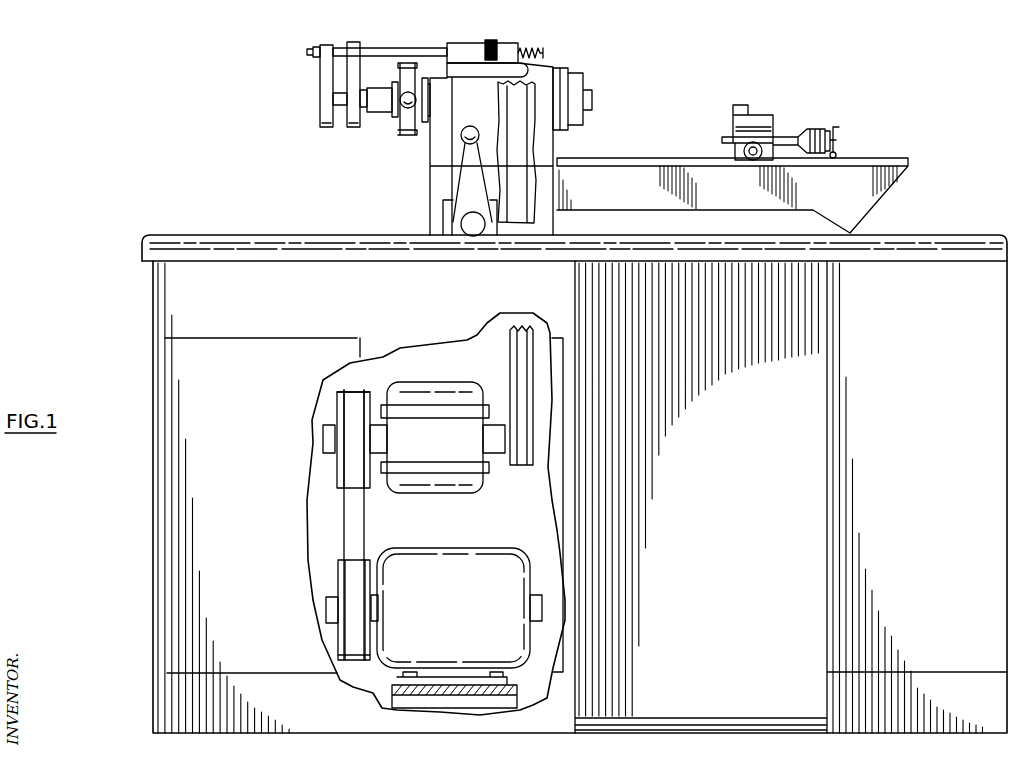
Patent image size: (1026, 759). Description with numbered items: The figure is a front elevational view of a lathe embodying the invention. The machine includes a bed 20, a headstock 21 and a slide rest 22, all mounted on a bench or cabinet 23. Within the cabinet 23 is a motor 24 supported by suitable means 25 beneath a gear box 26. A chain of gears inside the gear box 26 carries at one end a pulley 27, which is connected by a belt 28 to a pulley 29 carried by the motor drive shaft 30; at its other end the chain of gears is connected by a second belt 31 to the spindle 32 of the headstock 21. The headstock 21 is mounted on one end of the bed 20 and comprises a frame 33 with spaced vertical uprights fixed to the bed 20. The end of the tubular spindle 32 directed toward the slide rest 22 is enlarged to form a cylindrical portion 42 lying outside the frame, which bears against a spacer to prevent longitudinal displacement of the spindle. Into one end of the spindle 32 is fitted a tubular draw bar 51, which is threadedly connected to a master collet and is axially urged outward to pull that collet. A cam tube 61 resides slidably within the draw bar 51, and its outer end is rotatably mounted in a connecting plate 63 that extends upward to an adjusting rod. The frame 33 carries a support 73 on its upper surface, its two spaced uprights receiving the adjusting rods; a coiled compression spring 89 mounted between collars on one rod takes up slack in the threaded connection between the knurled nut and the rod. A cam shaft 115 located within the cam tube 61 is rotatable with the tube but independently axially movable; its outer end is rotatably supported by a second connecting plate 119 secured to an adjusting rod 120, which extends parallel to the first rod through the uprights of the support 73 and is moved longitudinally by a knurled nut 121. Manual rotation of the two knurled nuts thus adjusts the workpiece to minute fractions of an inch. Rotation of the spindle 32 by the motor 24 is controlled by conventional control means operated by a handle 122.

The bed 20 is at (900, 185).
The headstock 21 is at (430, 158).
The slide rest 22 is at (777, 118).
The cabinet 23 is at (148, 292).
The motor 24 is at (490, 567).
The supporting means 25 is at (448, 697).
The gear box 26 is at (407, 480).
The pulley 27 is at (337, 410).
The belt 28 is at (366, 527).
The pulley 29 is at (338, 580).
The motor drive shaft 30 is at (327, 608).
The second belt 31 is at (522, 353).
The spindle 32 is at (586, 78).
The frame 33 is at (542, 66).
The cylindrical portion 42 is at (572, 74).
The draw bar 51 is at (380, 104).
The cam tube 61 is at (364, 108).
The connecting plate 63 is at (356, 72).
The support 73 is at (462, 53).
The coiled compression spring 89 is at (527, 46).
The cam shaft 115 is at (342, 106).
The connecting plate 119 is at (322, 72).
The adjusting rod 120 is at (390, 50).
The knurled nut 121 is at (492, 43).
The handle 122 is at (467, 182).